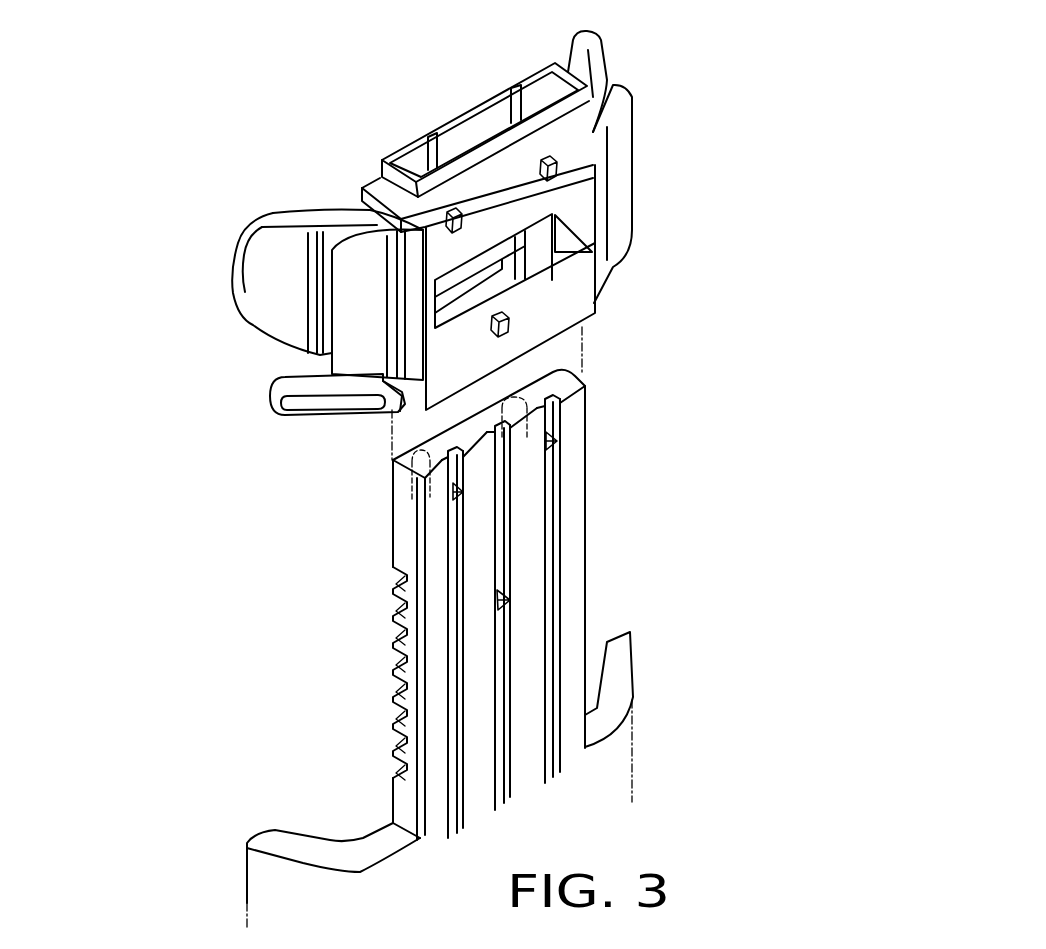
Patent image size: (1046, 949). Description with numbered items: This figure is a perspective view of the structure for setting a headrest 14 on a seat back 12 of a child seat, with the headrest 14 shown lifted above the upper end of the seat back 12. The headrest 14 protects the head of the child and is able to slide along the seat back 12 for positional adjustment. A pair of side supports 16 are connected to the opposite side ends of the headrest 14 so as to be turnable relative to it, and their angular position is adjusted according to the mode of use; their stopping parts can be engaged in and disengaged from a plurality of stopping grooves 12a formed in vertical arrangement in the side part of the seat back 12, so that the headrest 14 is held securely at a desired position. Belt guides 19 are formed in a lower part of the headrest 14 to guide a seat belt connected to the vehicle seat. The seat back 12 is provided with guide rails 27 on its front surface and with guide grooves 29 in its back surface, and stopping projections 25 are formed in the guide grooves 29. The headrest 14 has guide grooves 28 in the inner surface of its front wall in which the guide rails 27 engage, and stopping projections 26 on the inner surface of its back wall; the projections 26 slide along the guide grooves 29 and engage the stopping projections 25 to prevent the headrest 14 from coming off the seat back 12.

The seat back 12 is at (573, 460).
The stopping grooves 12a is at (397, 726).
The headrest 14 is at (477, 104).
The side supports 16 is at (590, 33).
The belt guides 19 is at (312, 418).
The stopping projections 25 is at (463, 498).
The stopping projections 26 is at (540, 162).
The guide rails 27 is at (413, 478).
The guide grooves 28 is at (512, 88).
The guide grooves 29 is at (553, 418).